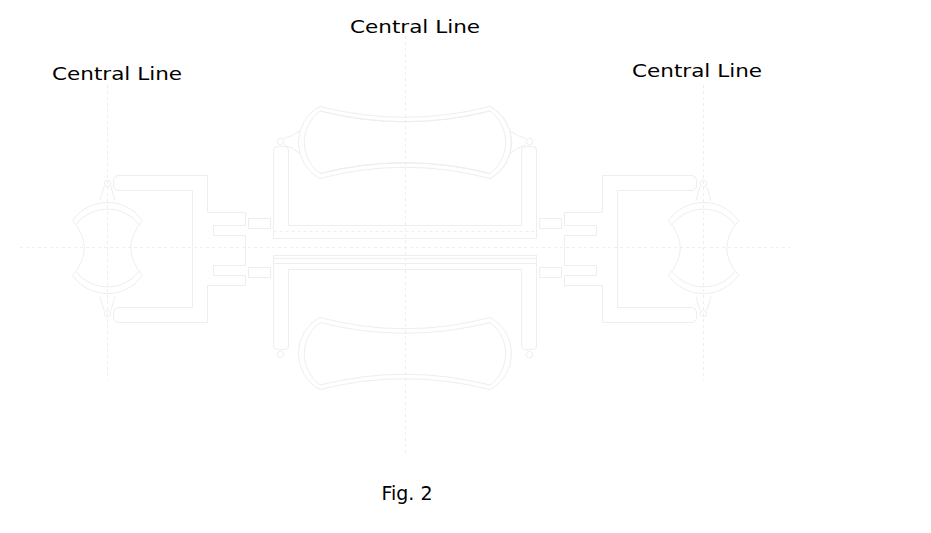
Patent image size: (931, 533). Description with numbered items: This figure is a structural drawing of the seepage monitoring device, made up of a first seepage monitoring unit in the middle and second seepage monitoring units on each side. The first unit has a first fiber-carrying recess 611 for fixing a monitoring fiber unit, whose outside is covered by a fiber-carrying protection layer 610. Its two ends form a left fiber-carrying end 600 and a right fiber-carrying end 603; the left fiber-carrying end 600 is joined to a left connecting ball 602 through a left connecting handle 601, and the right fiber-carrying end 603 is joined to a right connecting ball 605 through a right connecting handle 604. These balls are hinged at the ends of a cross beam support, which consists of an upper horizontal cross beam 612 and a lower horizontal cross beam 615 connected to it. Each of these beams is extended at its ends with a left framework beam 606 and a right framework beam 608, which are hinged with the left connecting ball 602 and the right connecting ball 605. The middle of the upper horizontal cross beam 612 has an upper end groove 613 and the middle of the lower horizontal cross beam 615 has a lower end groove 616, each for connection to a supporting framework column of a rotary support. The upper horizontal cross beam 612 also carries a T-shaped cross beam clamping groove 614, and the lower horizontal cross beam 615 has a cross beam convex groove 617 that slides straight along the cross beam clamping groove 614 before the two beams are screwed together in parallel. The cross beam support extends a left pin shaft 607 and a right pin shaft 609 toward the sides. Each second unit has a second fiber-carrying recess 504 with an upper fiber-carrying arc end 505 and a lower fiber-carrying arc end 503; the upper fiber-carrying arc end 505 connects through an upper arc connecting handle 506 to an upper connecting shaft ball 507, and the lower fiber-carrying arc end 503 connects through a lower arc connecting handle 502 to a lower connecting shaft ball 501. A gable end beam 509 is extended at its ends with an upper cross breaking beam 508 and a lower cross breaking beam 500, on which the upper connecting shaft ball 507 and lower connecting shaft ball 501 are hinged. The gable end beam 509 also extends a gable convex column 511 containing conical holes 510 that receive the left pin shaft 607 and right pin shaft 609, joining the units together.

The lower cross breaking beam 500 is at (404, 320).
The lower connecting shaft ball 501 is at (407, 324).
The lower arc connecting handle 502 is at (405, 311).
The lower fiber-carrying arc end 503 is at (403, 283).
The second fiber-carrying recess 504 is at (403, 248).
The upper fiber-carrying arc end 505 is at (407, 213).
The upper arc connecting handle 506 is at (405, 187).
The upper connecting shaft ball 507 is at (406, 171).
The upper cross breaking beam 508 is at (404, 177).
The gable end beam 509 is at (415, 249).
The conical holes 510 is at (405, 288).
The gable convex column 511 is at (405, 202).
The left fiber-carrying end 600 is at (393, 248).
The left connecting handle 601 is at (269, 249).
The left connecting ball 602 is at (255, 247).
The right fiber-carrying end 603 is at (510, 245).
The right connecting handle 604 is at (534, 246).
The right connecting ball 605 is at (549, 248).
The left framework beam 606 is at (296, 247).
The left pin shaft 607 is at (285, 247).
The right framework beam 608 is at (514, 247).
The right pin shaft 609 is at (524, 246).
The fiber-carrying protection layer 610 is at (404, 249).
The first fiber-carrying recess 611 is at (405, 255).
The upper horizontal cross beam 612 is at (405, 221).
The upper end groove 613 is at (419, 208).
The T-shaped cross beam clamping groove 614 is at (405, 221).
The lower horizontal cross beam 615 is at (405, 278).
The lower end groove 616 is at (405, 280).
The cross beam convex groove 617 is at (508, 276).